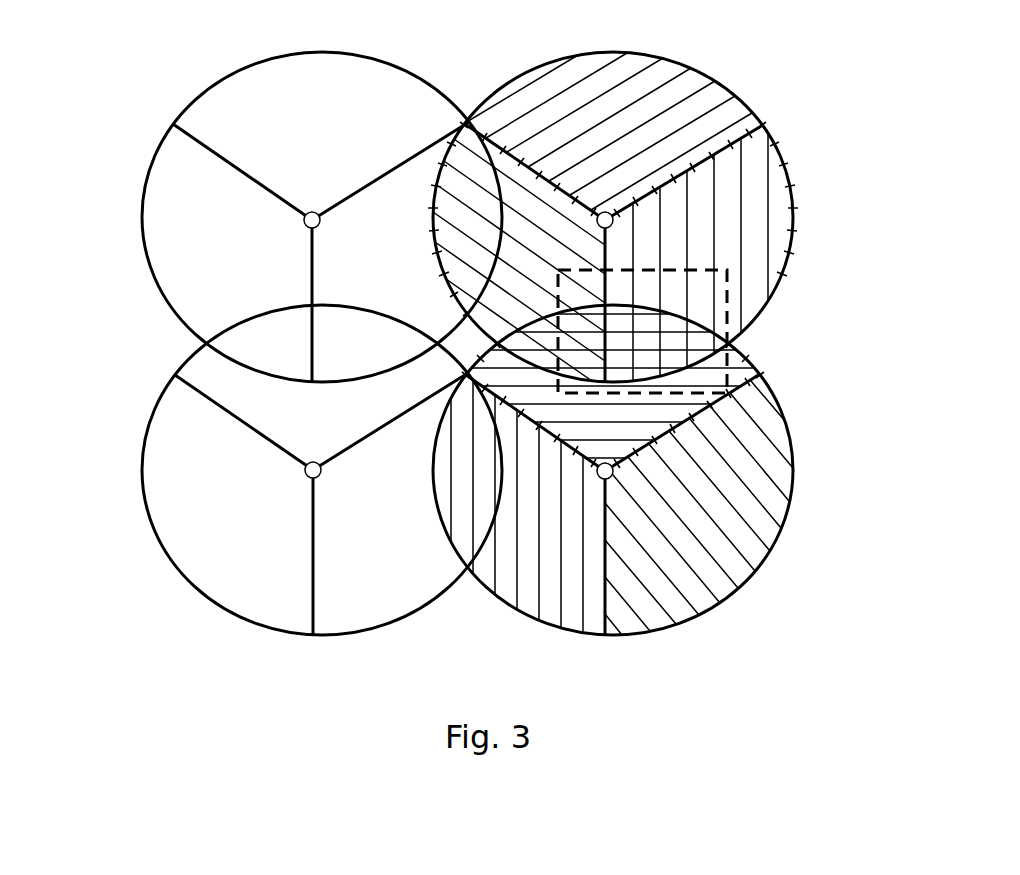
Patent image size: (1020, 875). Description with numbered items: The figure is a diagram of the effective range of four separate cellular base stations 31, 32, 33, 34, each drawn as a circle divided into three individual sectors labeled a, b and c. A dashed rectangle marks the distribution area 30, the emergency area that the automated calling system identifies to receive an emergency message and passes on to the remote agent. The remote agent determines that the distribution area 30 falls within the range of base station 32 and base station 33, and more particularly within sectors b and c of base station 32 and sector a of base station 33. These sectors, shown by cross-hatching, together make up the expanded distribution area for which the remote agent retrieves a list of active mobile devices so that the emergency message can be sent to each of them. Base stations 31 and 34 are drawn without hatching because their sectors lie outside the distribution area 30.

The distribution area 30 is at (728, 302).
The cellular base station 31 is at (196, 103).
The base station 32 is at (712, 82).
The base station 33 is at (750, 574).
The cellular base station 34 is at (167, 553).